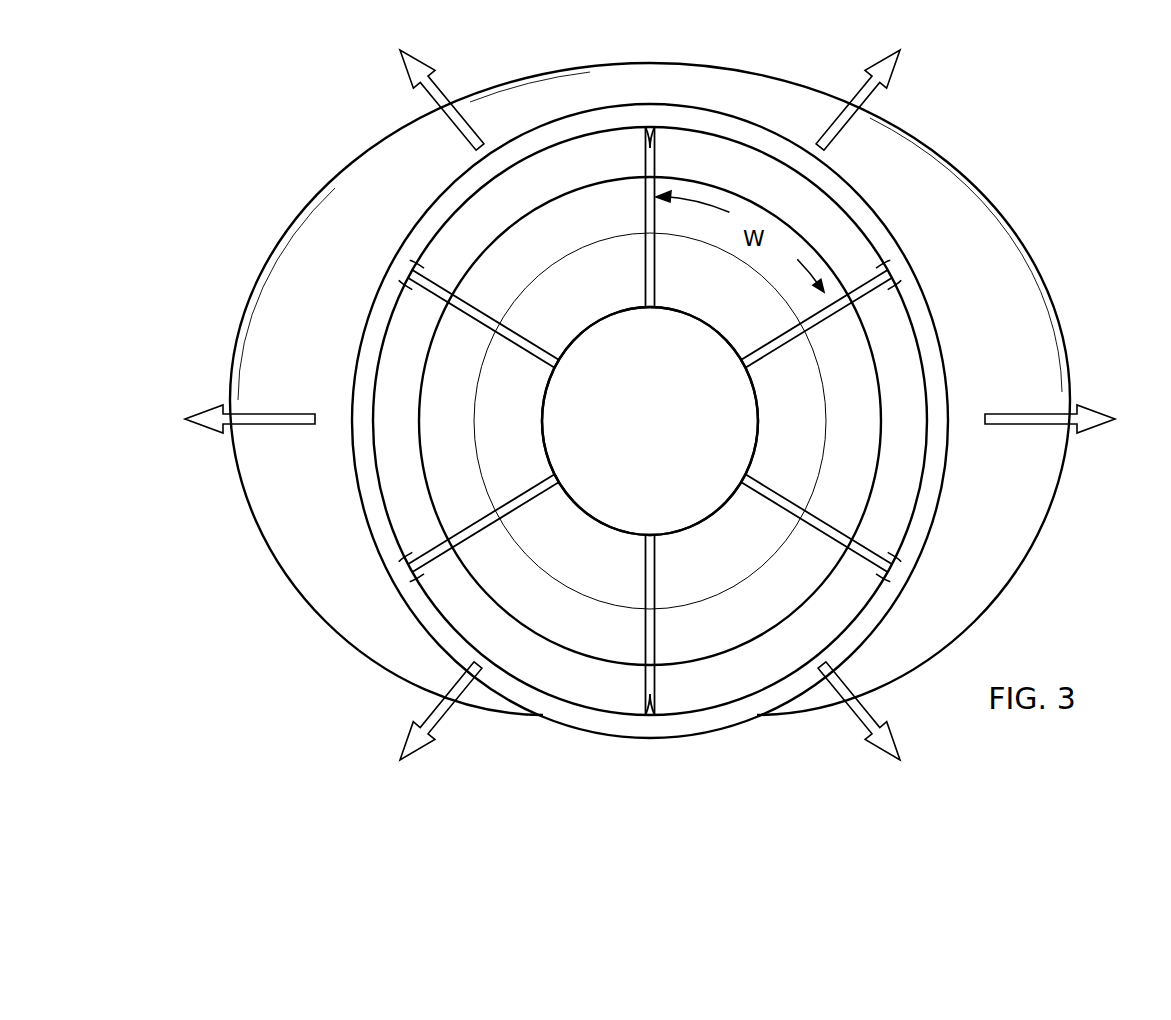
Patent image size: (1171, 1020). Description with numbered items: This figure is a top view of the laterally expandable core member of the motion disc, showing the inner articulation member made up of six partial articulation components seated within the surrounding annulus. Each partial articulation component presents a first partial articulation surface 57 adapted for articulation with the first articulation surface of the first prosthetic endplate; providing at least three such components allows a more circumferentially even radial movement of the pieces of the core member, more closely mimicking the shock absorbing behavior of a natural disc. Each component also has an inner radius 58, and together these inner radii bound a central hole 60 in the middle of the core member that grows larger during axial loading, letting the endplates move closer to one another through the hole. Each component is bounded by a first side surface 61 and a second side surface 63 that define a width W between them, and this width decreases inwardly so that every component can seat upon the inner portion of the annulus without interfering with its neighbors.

The first partial articulation surface 57 is at (560, 309).
The inner radius 58 is at (706, 319).
The central hole 60 is at (636, 425).
The first side surface 61 is at (656, 147).
The second side surface 63 is at (873, 270).